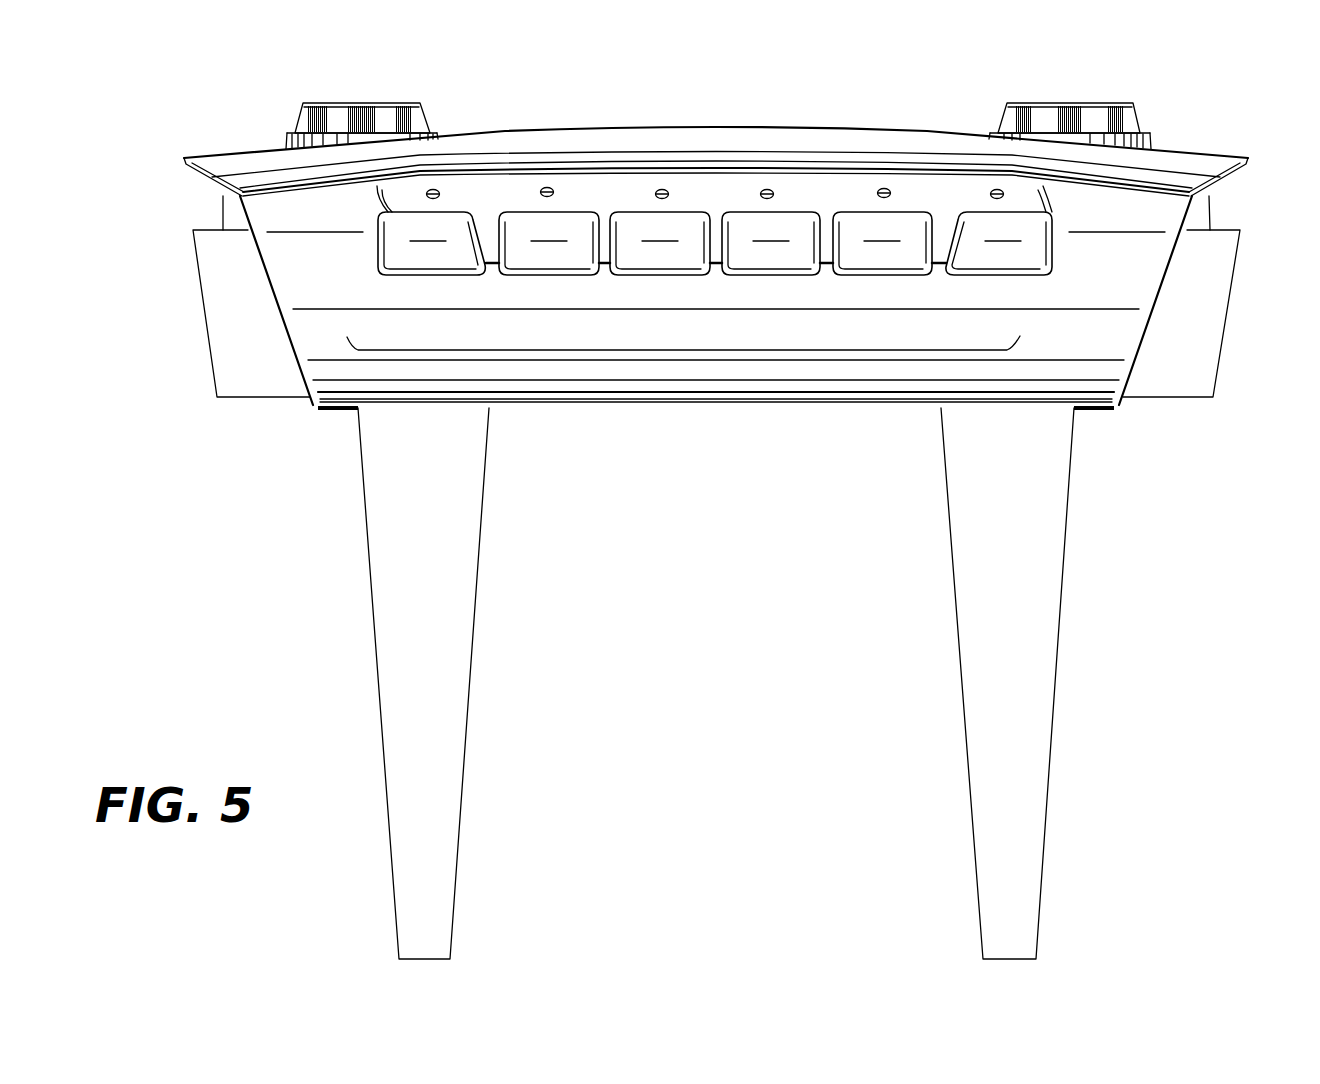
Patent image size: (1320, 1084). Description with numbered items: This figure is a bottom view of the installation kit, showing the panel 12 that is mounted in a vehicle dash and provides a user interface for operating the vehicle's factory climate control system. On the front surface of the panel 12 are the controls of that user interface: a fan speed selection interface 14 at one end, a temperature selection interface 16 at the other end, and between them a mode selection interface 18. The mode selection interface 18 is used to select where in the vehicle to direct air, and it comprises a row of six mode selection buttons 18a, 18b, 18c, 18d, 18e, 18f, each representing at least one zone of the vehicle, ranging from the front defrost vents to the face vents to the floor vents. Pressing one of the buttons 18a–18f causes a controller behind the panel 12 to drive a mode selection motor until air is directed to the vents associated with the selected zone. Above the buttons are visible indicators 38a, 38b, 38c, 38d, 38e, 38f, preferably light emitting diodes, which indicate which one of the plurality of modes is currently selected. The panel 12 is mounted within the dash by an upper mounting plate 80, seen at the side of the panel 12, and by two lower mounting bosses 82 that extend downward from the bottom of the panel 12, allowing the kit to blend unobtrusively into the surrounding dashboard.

The panel 12 is at (282, 208).
The fan speed selection interface 14 is at (337, 103).
The temperature selection interface 16 is at (1073, 103).
The mode selection interface 18 is at (681, 350).
The mode selection button 18a is at (428, 255).
The mode selection button 18b is at (570, 248).
The mode selection button 18c is at (680, 248).
The mode selection button 18d is at (777, 248).
The mode selection button 18e is at (893, 247).
The mode selection button 18f is at (1007, 248).
The visible indicator 38a is at (437, 189).
The visible indicator 38b is at (548, 187).
The visible indicator 38c is at (663, 189).
The visible indicator 38d is at (767, 189).
The visible indicator 38e is at (878, 192).
The visible indicator 38f is at (994, 189).
The upper mounting plate 80 is at (1228, 310).
The lower mounting boss 82 is at (434, 767).